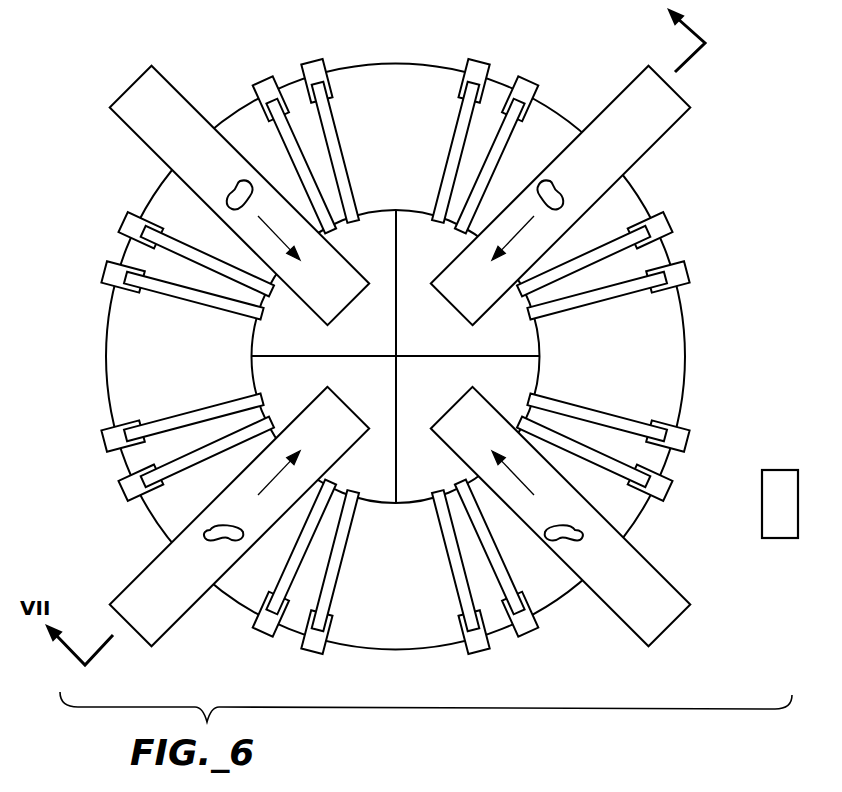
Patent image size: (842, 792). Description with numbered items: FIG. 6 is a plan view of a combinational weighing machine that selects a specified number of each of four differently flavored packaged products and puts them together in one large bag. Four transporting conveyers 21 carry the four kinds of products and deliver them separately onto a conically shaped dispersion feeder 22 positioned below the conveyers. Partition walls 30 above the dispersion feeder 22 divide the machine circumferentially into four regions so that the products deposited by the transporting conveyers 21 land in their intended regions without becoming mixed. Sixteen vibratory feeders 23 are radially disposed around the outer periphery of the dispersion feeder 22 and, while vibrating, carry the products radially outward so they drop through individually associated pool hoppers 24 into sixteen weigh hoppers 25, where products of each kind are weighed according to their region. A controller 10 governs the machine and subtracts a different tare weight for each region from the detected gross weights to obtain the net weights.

The controller 10 is at (762, 512).
The transporting conveyer 21 is at (140, 88).
The dispersion feeder 22 is at (422, 220).
The vibratory feeder 23 is at (347, 158).
The pool hopper 24 is at (395, 345).
The weigh hopper 25 is at (395, 356).
The partition wall 30 is at (512, 358).